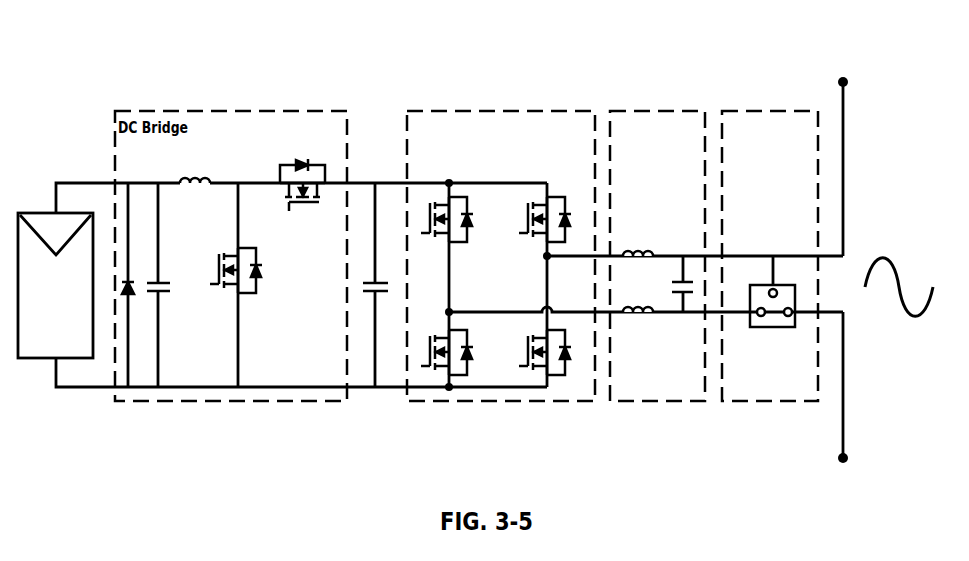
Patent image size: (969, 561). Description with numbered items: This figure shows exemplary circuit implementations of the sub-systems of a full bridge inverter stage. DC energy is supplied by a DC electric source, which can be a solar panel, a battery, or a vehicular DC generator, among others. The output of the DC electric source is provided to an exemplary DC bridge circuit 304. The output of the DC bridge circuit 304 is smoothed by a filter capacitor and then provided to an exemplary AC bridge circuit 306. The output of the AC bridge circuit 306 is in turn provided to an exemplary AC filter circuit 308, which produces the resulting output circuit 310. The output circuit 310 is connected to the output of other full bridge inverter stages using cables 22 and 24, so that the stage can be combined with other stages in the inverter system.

The cable 22 is at (840, 98).
The cable 24 is at (842, 428).
The DC bridge circuit 304 is at (302, 168).
The AC bridge circuit 306 is at (625, 256).
The AC filter circuit 308 is at (657, 256).
The output circuit 310 is at (770, 256).